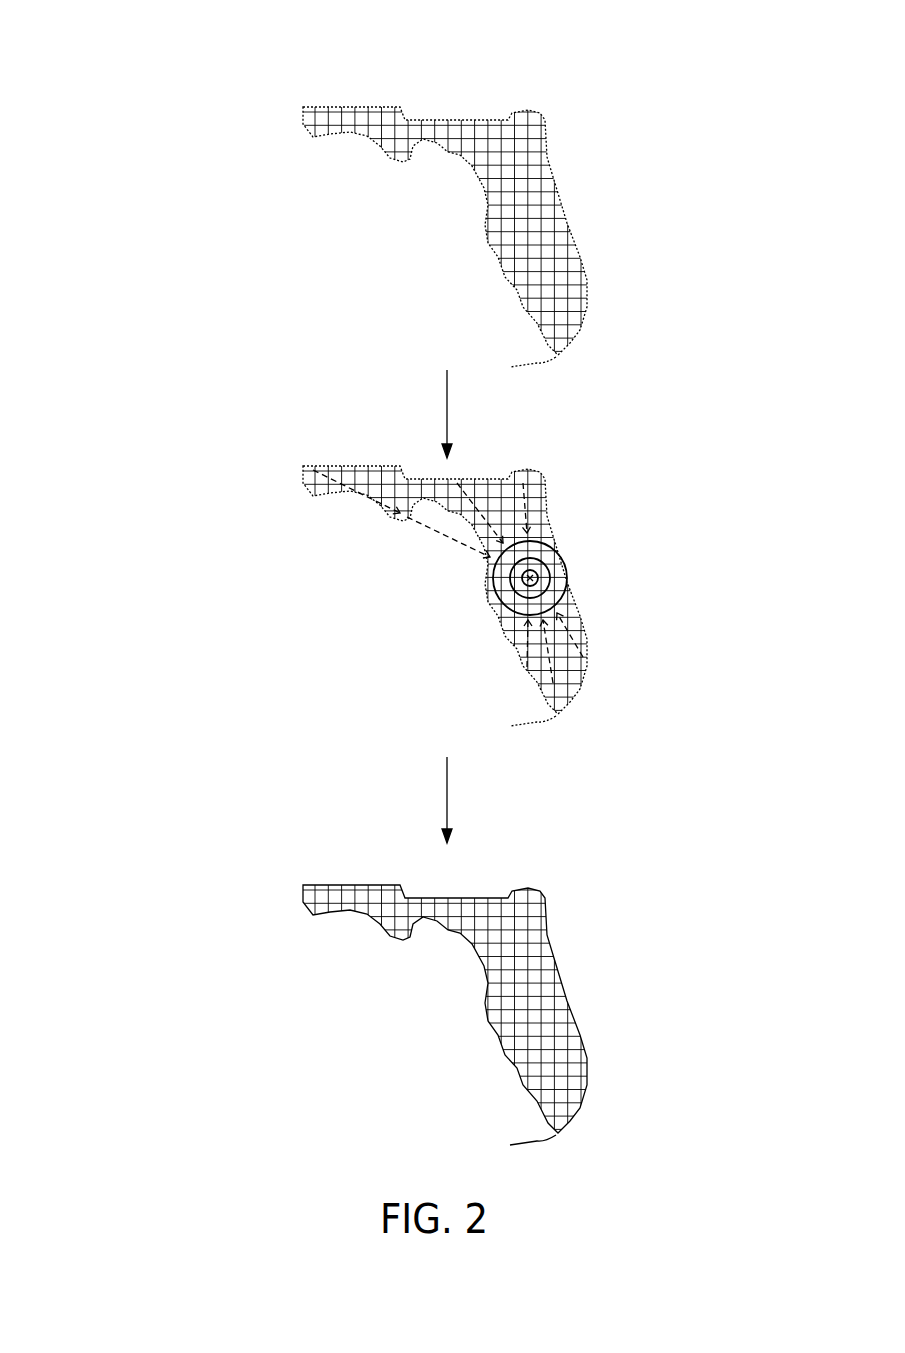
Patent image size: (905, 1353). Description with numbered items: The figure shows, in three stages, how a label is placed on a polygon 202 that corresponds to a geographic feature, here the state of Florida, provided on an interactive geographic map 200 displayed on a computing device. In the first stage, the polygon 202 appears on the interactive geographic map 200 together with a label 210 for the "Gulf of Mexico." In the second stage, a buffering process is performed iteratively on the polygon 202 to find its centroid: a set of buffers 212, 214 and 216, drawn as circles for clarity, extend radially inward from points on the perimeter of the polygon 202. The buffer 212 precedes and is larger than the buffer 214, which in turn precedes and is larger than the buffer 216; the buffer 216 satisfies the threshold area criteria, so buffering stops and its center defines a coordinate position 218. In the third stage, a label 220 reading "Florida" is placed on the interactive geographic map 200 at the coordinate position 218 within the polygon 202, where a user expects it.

The interactive geographic map 200 is at (777, 184).
The polygon 202 is at (353, 107).
The label 210 is at (310, 223).
The buffer 212 is at (538, 541).
The buffer 214 is at (538, 560).
The buffer 216 is at (536, 573).
The coordinate position 218 is at (533, 578).
The label 220 is at (498, 990).